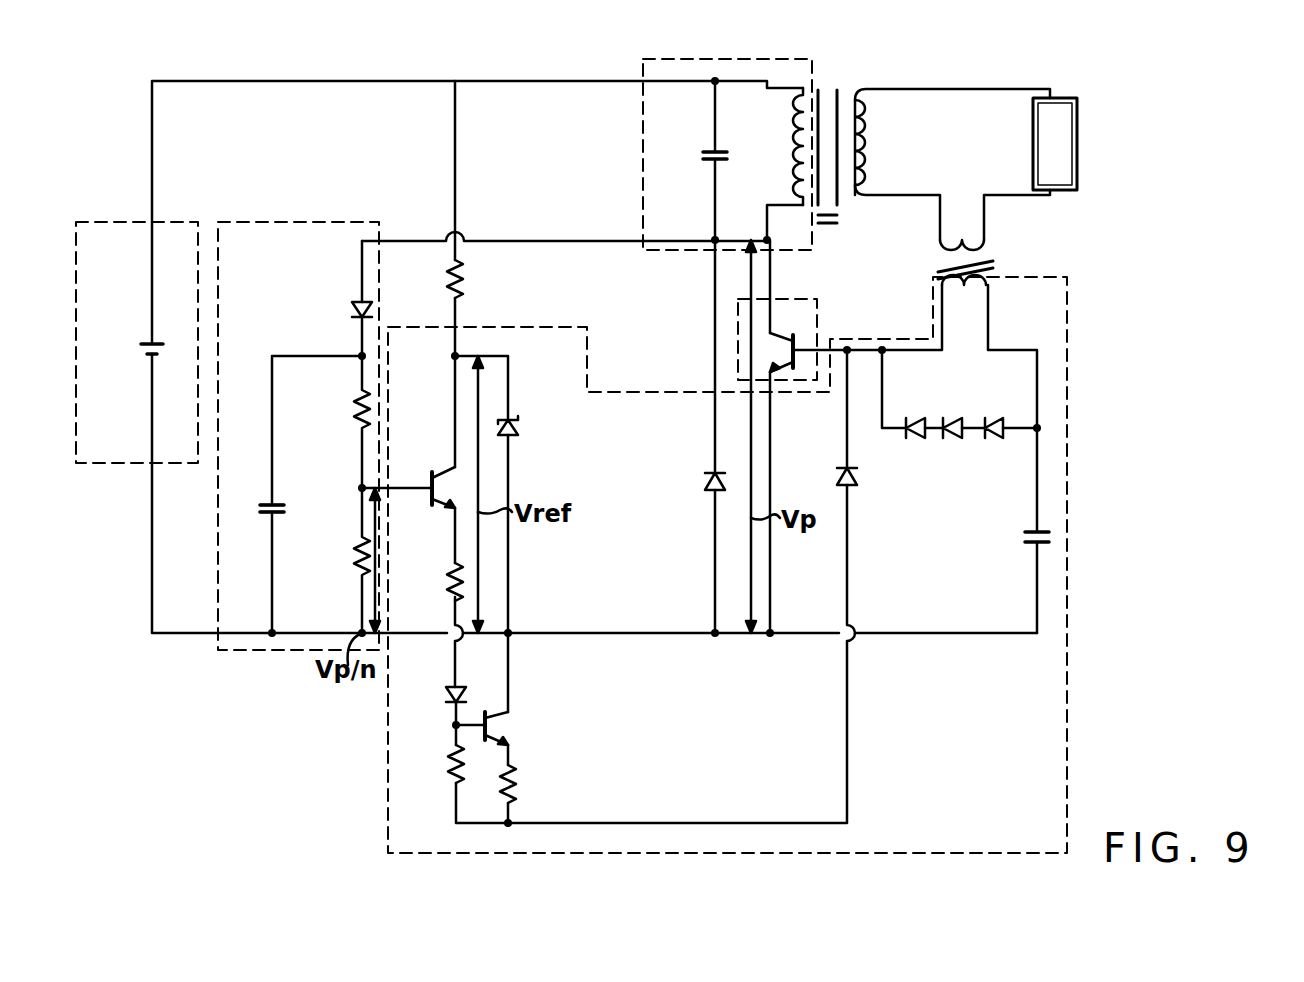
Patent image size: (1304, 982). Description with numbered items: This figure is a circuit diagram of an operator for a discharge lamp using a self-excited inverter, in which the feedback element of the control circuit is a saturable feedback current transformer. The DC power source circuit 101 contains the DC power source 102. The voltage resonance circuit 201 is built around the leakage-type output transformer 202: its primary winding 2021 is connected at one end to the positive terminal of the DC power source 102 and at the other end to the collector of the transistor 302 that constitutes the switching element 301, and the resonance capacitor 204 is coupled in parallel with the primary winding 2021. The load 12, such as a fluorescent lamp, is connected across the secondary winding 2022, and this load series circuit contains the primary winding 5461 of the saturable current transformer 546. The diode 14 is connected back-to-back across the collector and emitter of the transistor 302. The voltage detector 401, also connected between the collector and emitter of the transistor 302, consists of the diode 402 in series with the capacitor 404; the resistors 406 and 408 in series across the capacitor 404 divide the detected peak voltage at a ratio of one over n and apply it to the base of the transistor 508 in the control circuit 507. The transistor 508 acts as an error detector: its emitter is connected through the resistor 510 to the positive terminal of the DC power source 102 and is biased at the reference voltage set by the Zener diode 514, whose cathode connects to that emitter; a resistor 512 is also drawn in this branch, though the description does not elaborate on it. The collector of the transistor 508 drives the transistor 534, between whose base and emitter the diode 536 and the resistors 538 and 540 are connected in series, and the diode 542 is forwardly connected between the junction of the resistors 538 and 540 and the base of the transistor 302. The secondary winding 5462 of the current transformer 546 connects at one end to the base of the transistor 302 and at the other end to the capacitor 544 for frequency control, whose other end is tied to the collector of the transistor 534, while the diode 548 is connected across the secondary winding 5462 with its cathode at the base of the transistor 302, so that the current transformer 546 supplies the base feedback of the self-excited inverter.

The DC power source circuit 101 is at (103, 463).
The DC power source 102 is at (141, 344).
The voltage detector 401 is at (270, 650).
The diode 402 is at (354, 306).
The capacitor 404 is at (284, 505).
The resistor 406 is at (356, 408).
The resistor 408 is at (356, 560).
The control circuit 507 is at (640, 853).
The transistor 508 is at (426, 498).
The resistor 510 is at (464, 284).
The resistor 512 is at (444, 584).
The Zener diode 514 is at (512, 420).
The transistor 534 is at (500, 722).
The diode 536 is at (447, 690).
The resistor 538 is at (449, 777).
The resistor 540 is at (516, 788).
The diode 542 is at (858, 478).
The capacitor 544 is at (1027, 540).
The saturable type current transformer 546 is at (997, 244).
The primary winding 5461 is at (968, 238).
The secondary winding 5462 is at (976, 305).
The diode 548 is at (953, 438).
The voltage resonance circuit 201 is at (757, 59).
The output transformer 202 is at (840, 133).
The primary winding 2021 is at (782, 148).
The secondary winding 2022 is at (902, 147).
The resonance capacitor 204 is at (706, 152).
The switching element 301 is at (817, 299).
The transistor 302 is at (805, 322).
The diode 14 is at (706, 482).
The load 12 is at (1077, 124).